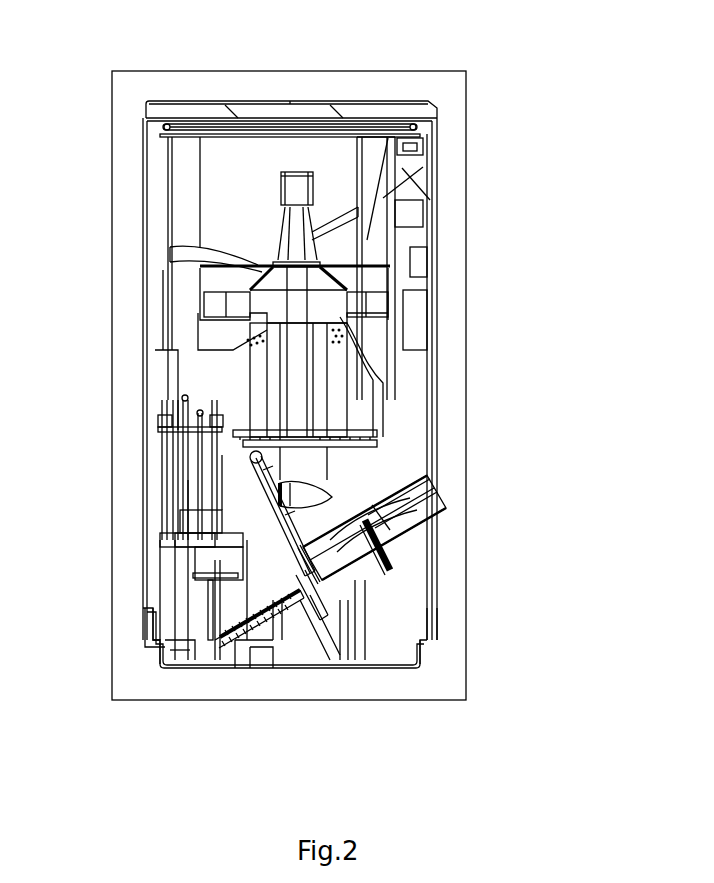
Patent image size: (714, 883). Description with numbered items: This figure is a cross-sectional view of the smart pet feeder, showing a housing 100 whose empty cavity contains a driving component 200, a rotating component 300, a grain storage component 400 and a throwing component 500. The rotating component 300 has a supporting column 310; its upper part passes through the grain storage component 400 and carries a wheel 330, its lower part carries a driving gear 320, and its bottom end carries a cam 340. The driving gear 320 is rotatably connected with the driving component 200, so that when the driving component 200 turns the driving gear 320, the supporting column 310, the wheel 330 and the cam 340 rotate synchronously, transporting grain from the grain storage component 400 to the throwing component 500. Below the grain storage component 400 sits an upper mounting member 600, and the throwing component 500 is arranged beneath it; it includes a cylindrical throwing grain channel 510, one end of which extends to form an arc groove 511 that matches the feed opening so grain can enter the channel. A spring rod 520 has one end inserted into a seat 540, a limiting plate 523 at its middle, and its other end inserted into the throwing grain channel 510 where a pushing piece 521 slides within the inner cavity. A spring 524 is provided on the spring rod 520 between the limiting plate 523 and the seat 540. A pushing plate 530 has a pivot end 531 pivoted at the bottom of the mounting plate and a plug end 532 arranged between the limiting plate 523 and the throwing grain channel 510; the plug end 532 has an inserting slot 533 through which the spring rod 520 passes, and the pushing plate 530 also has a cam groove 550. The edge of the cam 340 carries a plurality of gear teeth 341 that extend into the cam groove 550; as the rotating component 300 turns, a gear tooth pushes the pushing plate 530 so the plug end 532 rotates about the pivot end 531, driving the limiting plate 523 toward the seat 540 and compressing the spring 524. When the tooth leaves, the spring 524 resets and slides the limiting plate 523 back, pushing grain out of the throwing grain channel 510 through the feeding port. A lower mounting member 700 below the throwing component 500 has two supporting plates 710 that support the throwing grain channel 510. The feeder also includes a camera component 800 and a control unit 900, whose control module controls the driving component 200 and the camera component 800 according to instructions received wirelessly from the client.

The housing 100 is at (380, 84).
The driving component 200 is at (233, 443).
The rotating component 300 is at (575, 187).
The supporting column 310 is at (363, 310).
The driving gear 320 is at (327, 423).
The wheel 330 is at (385, 240).
The cam 340 is at (420, 490).
The gear teeth 341 is at (315, 512).
The grain storage component 400 is at (235, 197).
The throwing component 500 is at (368, 778).
The throwing grain channel 510 is at (316, 618).
The arc groove 511 is at (383, 533).
The spring rod 520 is at (270, 640).
The pushing piece 521 is at (420, 537).
The limiting plate 523 is at (297, 606).
The spring 524 is at (262, 617).
The pushing plate 530 is at (250, 640).
The pivot end 531 is at (200, 540).
The plug end 532 is at (215, 590).
The inserting slot 533 is at (393, 580).
The seat 540 is at (180, 668).
The cam groove 550 is at (210, 577).
The upper mounting member 600 is at (215, 453).
The lower mounting member 700 is at (350, 672).
The supporting plates 710 is at (395, 600).
The camera component 800 is at (430, 127).
The control unit 900 is at (430, 163).